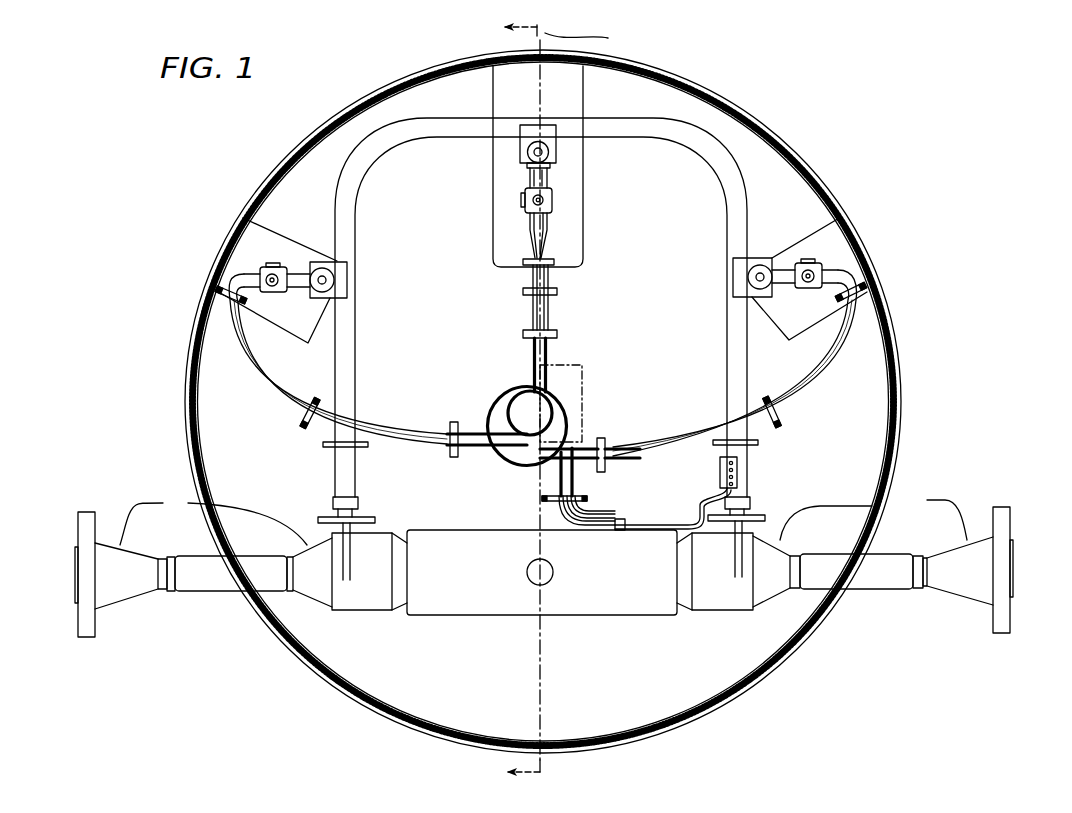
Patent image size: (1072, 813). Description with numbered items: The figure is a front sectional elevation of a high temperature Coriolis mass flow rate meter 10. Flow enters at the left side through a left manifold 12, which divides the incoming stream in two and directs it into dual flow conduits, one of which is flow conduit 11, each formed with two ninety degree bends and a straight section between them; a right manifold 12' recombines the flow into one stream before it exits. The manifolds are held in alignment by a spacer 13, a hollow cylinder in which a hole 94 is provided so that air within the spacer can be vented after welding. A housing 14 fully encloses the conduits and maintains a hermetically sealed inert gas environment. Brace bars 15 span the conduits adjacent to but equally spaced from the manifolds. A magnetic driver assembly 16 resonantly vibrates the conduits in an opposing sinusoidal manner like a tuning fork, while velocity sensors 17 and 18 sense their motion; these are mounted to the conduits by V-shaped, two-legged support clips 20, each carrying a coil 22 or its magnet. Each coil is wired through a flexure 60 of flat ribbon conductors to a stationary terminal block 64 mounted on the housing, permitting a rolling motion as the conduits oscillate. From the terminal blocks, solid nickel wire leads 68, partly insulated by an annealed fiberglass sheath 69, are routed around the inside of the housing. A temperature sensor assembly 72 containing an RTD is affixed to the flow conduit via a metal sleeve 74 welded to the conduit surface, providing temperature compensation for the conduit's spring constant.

The high temperature Coriolis mass flow rate meter 10 is at (182, 668).
The flow conduit 11 is at (357, 355).
The left manifold 12 is at (174, 565).
The right manifold 12' is at (916, 563).
The spacer 13 is at (485, 616).
The housing 14 is at (333, 688).
The brace bars 15 is at (330, 448).
The magnetic driver assembly 16 is at (512, 163).
The velocity sensor 17 is at (318, 303).
The velocity sensor 18 is at (761, 299).
The support clip 20 is at (540, 125).
The coil 22 is at (551, 153).
The flexure 60 is at (560, 179).
The terminal block 64 is at (552, 200).
The wire leads 68 is at (423, 442).
The fiberglass sheath 69 is at (526, 504).
The temperature sensor assembly 72 is at (717, 468).
The metal sleeve 74 is at (720, 490).
The hole 94 is at (553, 573).